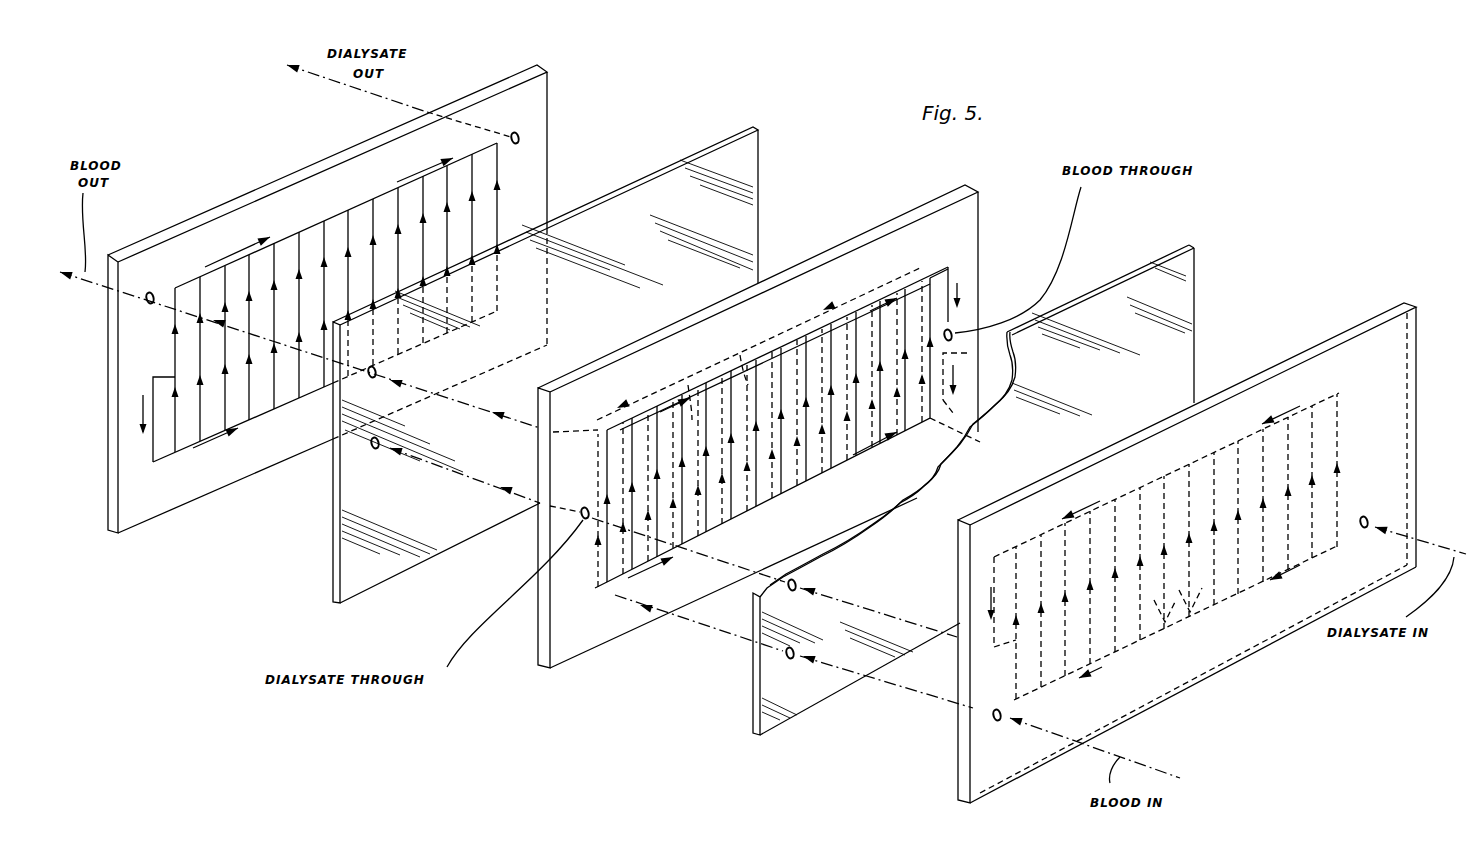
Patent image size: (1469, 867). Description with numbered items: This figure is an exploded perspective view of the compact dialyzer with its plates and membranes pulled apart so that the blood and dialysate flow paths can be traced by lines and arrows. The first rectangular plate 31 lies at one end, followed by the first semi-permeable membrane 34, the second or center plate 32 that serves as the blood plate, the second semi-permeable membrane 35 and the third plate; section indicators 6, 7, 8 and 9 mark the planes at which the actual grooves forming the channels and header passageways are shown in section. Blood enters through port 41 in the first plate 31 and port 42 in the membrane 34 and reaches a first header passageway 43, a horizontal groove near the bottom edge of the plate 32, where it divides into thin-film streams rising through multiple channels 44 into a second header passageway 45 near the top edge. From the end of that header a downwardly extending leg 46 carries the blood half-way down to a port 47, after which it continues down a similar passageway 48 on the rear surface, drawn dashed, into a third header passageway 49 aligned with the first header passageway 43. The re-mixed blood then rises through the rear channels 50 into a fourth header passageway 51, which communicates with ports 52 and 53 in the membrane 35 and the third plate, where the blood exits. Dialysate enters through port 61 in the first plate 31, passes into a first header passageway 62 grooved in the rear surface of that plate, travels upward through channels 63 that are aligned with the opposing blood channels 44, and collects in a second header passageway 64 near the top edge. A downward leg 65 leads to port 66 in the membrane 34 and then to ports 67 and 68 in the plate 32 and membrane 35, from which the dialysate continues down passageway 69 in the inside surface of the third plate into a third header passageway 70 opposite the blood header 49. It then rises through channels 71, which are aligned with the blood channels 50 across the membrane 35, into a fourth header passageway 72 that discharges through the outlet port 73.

The section line 6- 6 is at (933, 550).
The section line 7- 7 is at (571, 410).
The section line 8- 8 is at (518, 345).
The section line 9- 9 is at (132, 280).
The first rectangular plate 31 is at (1007, 780).
The second rectangular plate 32 is at (607, 632).
The first semi-permeable membrane 34 is at (773, 727).
The second semi-permeable membrane 35 is at (333, 580).
The port 41 is at (993, 725).
The port 42 is at (792, 663).
The first header passageway 43 is at (800, 483).
The channels 44 is at (762, 487).
The second header passageway 45 is at (790, 333).
The downwardly extending leg or passageway 46 is at (953, 267).
The port 47 is at (955, 332).
The vertical passageway 48 is at (967, 355).
The third header passageway 49 is at (903, 435).
The channels 50 is at (740, 355).
The fourth header passageway 51 is at (688, 385).
The port 52 is at (378, 382).
The port 53 is at (147, 307).
The port 61 is at (1372, 520).
The first header passageway 62 is at (1246, 586).
The channels 63 is at (1164, 608).
The second header passageway 64 is at (1220, 448).
The downwardly extending leg or passageway 65 is at (987, 590).
The port 66 is at (795, 595).
The port 67 is at (583, 518).
The port 68 is at (372, 453).
The vertical passageway 69 is at (153, 447).
The third header passageway 70 is at (215, 436).
The channels 71 is at (353, 213).
The fourth header passageway 72 is at (388, 192).
The outlet port 73 is at (520, 140).